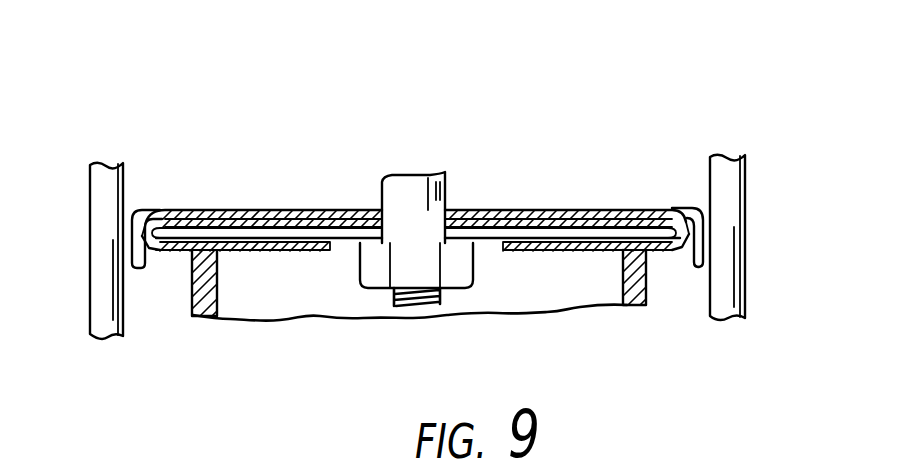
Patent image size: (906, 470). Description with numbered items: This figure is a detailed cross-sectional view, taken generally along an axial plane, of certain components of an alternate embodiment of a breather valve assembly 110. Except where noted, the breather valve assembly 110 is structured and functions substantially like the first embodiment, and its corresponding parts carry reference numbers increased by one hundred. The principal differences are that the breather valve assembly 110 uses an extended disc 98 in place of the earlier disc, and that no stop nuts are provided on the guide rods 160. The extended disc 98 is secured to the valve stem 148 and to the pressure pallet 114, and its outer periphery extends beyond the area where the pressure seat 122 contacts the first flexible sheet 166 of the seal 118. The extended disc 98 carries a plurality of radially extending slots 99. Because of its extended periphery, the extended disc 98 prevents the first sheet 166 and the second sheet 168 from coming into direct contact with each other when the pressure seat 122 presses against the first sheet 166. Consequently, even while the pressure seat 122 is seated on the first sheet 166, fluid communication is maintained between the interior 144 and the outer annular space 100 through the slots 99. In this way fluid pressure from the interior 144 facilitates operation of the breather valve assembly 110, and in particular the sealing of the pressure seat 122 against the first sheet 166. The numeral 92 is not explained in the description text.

The breather valve assembly 110 is at (98, 99).
The guide rods 160 is at (127, 175).
The outer annular space 100 is at (167, 234).
The extended disc 98 is at (370, 236).
The second sheet 168 is at (635, 230).
The valve stem 148 is at (412, 190).
The pressure pallet 114 is at (681, 204).
The interior 144 is at (600, 290).
The pressure seat 122 is at (648, 270).
The left support wall 92 is at (233, 255).
The seal 118 is at (272, 282).
The first flexible sheet 166 is at (310, 251).
The radially extending slots 99 is at (340, 246).